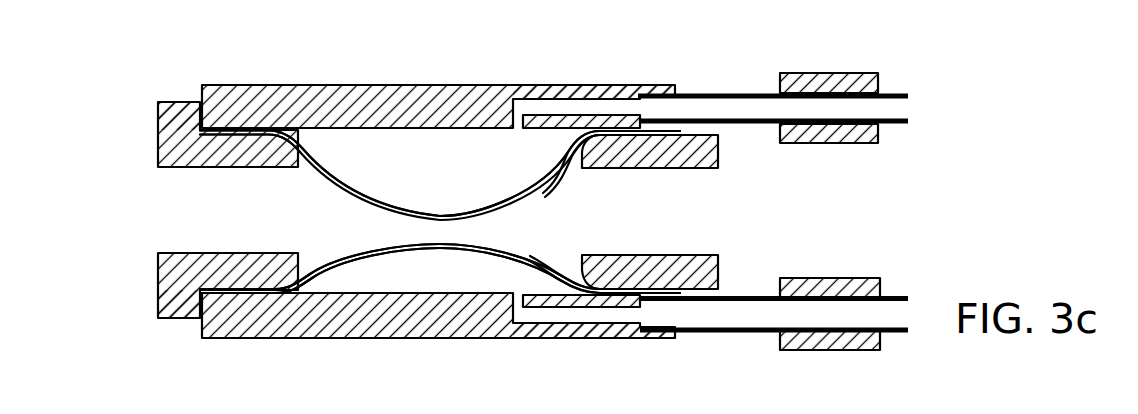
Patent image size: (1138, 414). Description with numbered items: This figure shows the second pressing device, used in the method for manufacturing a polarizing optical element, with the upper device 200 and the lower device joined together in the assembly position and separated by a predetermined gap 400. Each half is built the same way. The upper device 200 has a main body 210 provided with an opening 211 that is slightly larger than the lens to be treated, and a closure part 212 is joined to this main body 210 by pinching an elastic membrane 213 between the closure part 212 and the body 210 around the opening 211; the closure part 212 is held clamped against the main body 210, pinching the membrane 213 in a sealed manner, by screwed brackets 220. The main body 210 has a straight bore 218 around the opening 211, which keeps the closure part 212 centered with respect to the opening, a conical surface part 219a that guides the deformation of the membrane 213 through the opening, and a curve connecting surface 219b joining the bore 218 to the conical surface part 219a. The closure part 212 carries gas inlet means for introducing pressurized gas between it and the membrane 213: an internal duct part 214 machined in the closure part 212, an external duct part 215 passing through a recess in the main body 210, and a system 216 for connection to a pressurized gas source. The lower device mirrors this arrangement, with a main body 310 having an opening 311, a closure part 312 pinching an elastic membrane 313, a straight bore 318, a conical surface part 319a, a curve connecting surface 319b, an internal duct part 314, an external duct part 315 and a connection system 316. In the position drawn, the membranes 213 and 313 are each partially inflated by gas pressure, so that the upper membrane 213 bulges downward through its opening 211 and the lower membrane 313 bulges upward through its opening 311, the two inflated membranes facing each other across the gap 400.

The device 200 is at (1035, 0).
The screwed brackets 220 is at (164, 8).
The main body 210 is at (158, 131).
The straight bore 218 is at (183, 102).
The curve connecting surface 219b is at (300, 130).
The conical surface part 219a is at (576, 152).
The elastic membrane 213 is at (378, 202).
The opening 211 is at (425, 160).
The closure part 212 is at (463, 103).
The internal duct part 214 is at (570, 104).
The external duct part 215 is at (727, 90).
The connection system 216 is at (827, 73).
The main body 310 is at (158, 278).
The straight bore 318 is at (187, 318).
The conical surface part 319a is at (305, 300).
The curve connecting surface 319b is at (608, 255).
The elastic membrane 313 is at (372, 248).
The opening 311 is at (472, 273).
The closure part 312 is at (353, 317).
The internal duct part 314 is at (562, 313).
The external duct part 315 is at (717, 333).
The connection system 316 is at (830, 352).
The gap 400 is at (438, 232).